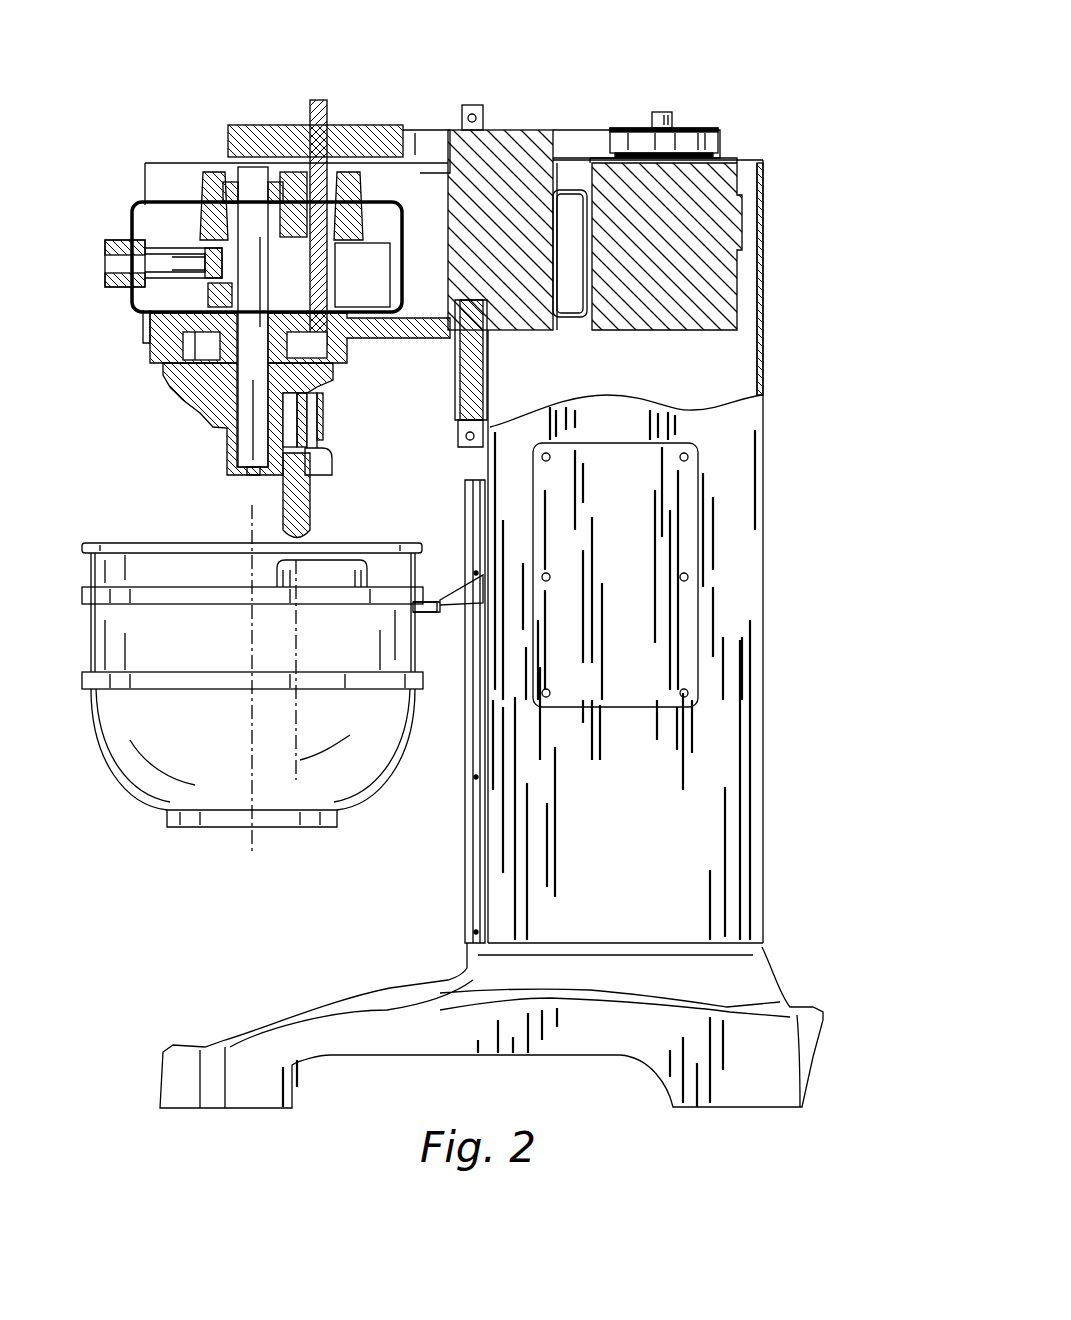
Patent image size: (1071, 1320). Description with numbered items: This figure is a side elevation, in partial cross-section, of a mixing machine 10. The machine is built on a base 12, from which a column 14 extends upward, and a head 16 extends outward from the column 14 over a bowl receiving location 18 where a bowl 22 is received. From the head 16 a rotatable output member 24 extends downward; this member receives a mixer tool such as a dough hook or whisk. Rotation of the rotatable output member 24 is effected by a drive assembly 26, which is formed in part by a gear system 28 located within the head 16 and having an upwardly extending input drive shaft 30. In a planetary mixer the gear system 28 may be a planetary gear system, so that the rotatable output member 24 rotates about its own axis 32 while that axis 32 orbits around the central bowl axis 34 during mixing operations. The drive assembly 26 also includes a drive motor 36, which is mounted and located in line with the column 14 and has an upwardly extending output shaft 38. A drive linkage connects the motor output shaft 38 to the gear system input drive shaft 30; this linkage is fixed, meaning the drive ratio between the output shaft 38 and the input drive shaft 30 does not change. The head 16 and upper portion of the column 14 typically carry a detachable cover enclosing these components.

The mixing machine 10 is at (712, 88).
The base 12 is at (393, 987).
The column 14 is at (698, 812).
The head 16 is at (140, 180).
The bowl receiving location 18 is at (135, 530).
The bowl 22 is at (150, 768).
The rotatable output member 24 is at (310, 540).
The drive assembly 26 is at (518, 100).
The gear system 28 is at (395, 190).
The input drive shaft 30 is at (320, 124).
The axis 32 is at (297, 733).
The central bowl axis 34 is at (243, 875).
The drive motor 36 is at (712, 268).
The output shaft 38 is at (650, 122).